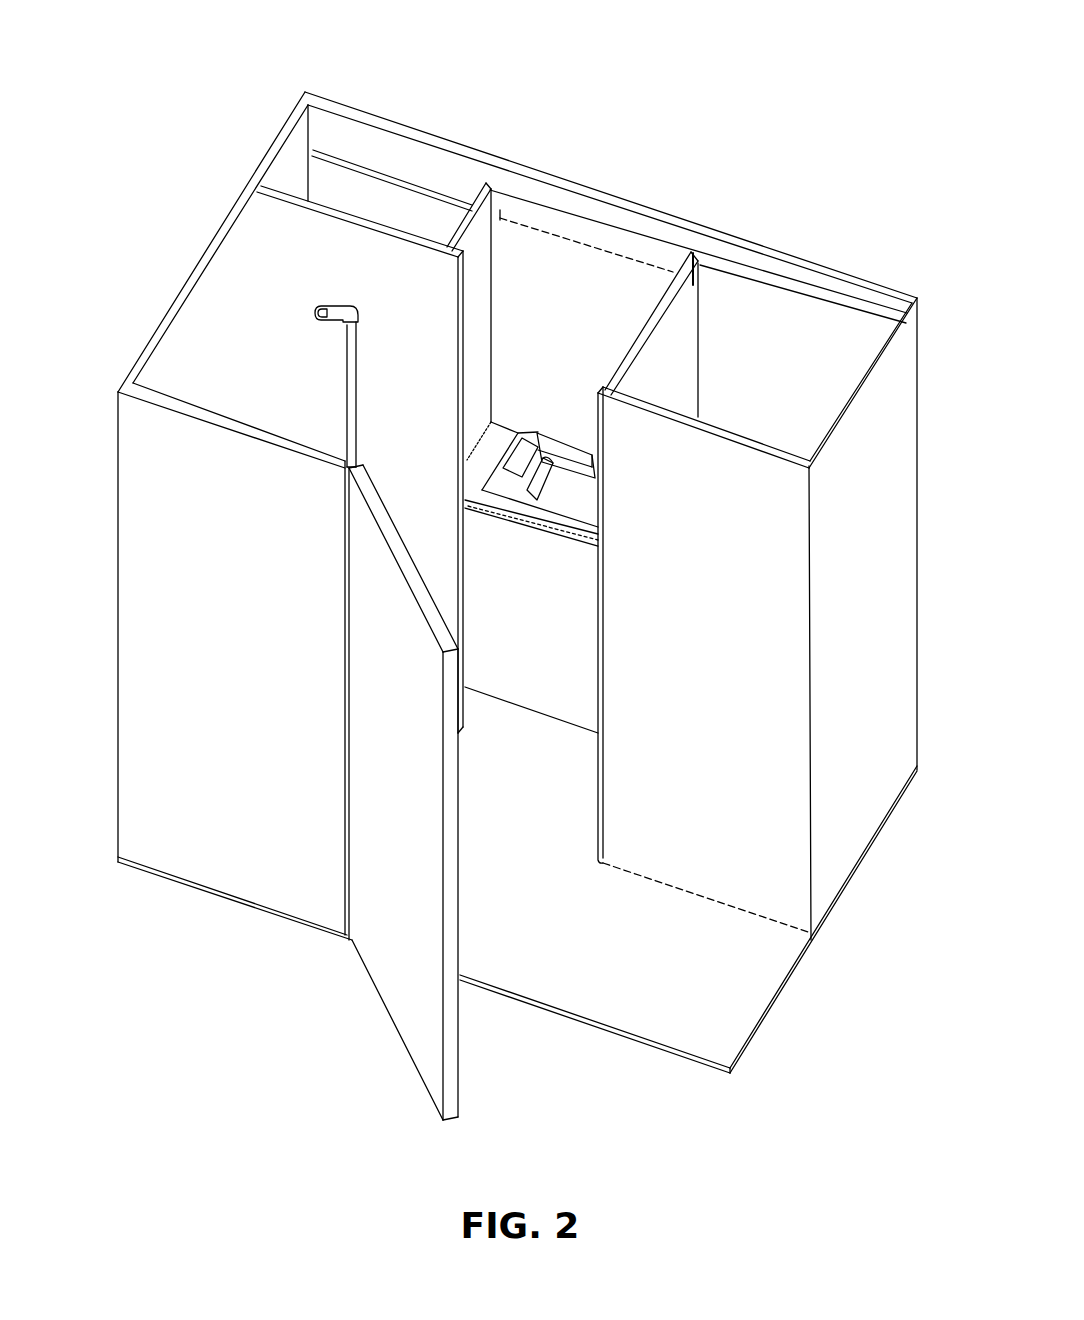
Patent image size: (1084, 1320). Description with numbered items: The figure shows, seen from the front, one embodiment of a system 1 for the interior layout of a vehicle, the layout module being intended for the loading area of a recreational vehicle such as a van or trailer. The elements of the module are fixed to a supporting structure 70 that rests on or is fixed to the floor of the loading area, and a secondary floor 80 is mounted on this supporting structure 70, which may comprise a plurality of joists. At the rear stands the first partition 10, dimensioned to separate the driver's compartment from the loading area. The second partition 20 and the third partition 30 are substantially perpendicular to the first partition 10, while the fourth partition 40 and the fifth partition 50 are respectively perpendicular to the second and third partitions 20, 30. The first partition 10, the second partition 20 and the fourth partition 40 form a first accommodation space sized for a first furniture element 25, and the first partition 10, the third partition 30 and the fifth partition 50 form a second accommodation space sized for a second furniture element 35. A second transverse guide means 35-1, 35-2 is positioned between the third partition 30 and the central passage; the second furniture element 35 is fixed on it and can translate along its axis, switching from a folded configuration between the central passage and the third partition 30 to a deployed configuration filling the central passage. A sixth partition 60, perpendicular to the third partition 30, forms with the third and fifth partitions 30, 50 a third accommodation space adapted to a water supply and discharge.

The system for the interior layout of a vehicle 1 is at (198, 86).
The first partition 10 is at (397, 163).
The second partition 20 is at (895, 468).
The first furniture element 25 is at (697, 253).
The third partition 30 is at (185, 340).
The second furniture element 35 is at (568, 230).
The second transverse guide means 35-1 is at (318, 148).
The second transverse guide means 35-2 is at (503, 216).
The fourth partition 40 is at (793, 890).
The fifth partition 50 is at (280, 227).
The sixth partition 60 is at (145, 635).
The supporting structure 70 is at (597, 1030).
The secondary floor 80 is at (713, 1045).